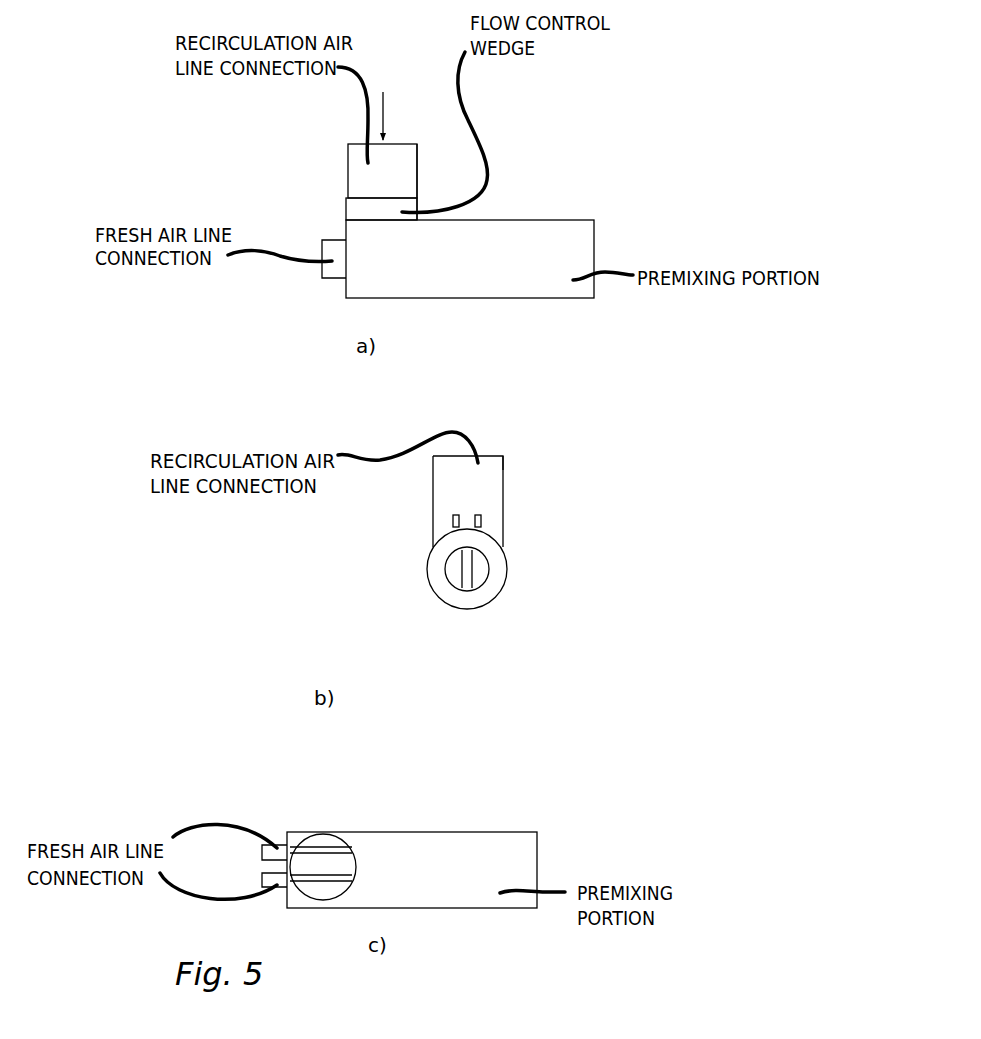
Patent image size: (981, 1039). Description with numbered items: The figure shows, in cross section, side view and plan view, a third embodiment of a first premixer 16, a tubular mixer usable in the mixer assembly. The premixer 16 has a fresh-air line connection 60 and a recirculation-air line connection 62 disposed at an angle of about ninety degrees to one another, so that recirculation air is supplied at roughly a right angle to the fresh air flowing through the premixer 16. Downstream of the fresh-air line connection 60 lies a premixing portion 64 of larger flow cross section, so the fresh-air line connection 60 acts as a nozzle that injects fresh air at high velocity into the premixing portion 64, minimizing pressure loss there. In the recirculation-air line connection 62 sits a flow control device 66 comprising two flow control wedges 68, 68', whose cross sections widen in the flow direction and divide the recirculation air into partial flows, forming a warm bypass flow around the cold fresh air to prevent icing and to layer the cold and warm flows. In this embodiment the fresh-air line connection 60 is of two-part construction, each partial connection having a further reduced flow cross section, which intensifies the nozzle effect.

The first premixer 16 is at (543, 101).
The fresh-air line connection 60 is at (330, 245).
The recirculation-air line connection 62 is at (405, 182).
The premixing portion 64 is at (505, 242).
The flow control device 66 is at (340, 172).
The flow control wedge 68 is at (419, 588).
The second flow control wedge 68' is at (363, 662).